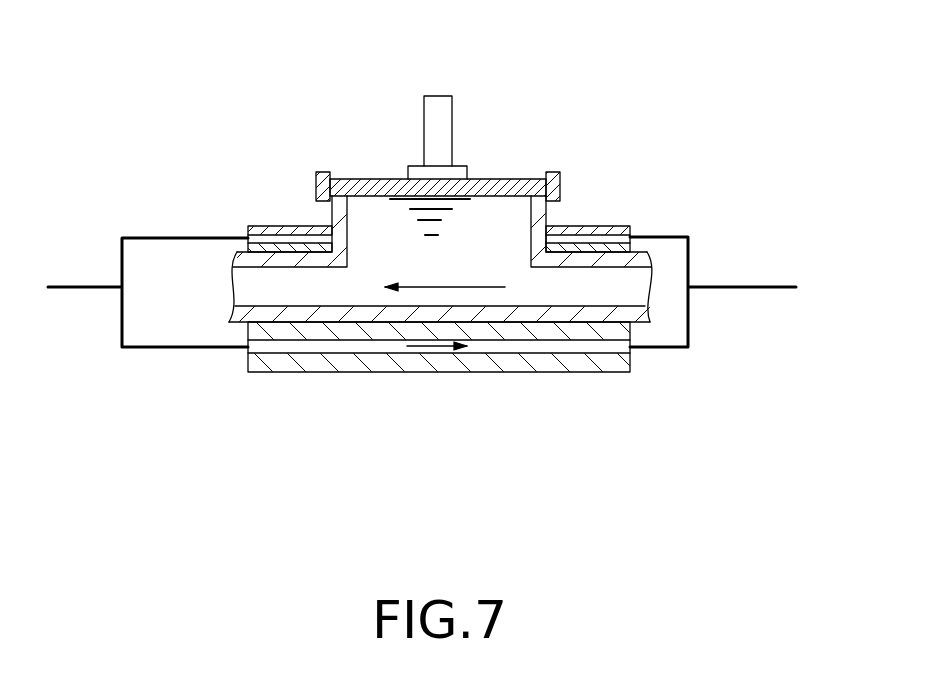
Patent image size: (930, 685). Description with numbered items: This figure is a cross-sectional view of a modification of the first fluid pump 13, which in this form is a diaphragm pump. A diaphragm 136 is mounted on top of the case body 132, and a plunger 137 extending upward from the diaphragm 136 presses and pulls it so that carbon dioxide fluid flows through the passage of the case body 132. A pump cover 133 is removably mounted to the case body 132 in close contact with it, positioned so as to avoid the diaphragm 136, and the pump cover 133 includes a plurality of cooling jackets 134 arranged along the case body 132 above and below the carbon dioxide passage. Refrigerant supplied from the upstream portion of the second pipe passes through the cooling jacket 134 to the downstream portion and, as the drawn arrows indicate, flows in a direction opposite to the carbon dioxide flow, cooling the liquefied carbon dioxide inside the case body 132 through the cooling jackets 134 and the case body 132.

The first fluid pump 13 is at (292, 160).
The case body 132 is at (263, 312).
The pump cover 133 is at (592, 227).
The cooling jacket 134 is at (615, 232).
The diaphragm 136 is at (497, 178).
The plunger 137 is at (440, 107).